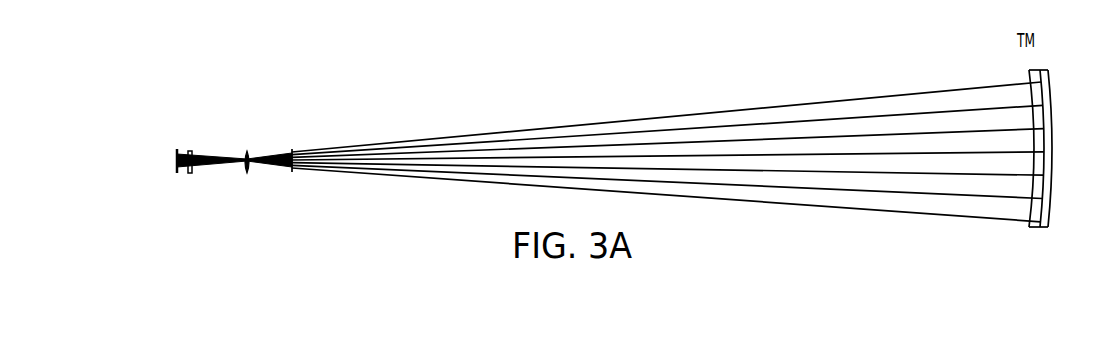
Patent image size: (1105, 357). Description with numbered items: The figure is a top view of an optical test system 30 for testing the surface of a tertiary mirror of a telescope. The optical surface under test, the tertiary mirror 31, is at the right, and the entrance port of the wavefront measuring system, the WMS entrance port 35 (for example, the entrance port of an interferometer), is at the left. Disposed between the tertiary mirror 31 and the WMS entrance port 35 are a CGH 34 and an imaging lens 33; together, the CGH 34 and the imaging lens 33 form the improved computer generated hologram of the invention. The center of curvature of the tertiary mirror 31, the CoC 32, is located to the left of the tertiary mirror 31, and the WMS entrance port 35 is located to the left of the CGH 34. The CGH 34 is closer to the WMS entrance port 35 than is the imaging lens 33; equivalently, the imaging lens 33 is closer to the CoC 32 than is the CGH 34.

The optical system 30 is at (398, 96).
The tertiary mirror 31 is at (1052, 153).
The center of curvature 32 is at (292, 172).
The imaging lens 33 is at (248, 150).
The CGH 34 is at (190, 150).
The WMS entrance port 35 is at (176, 160).